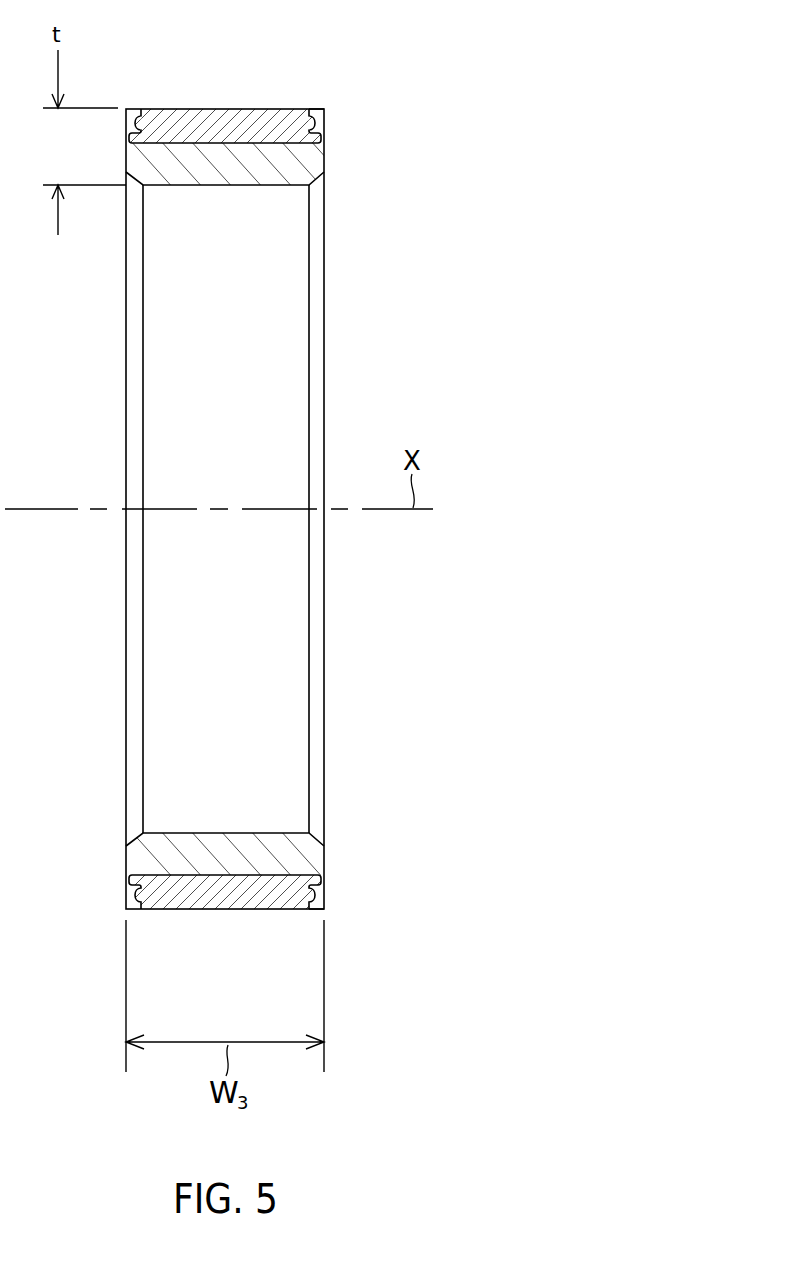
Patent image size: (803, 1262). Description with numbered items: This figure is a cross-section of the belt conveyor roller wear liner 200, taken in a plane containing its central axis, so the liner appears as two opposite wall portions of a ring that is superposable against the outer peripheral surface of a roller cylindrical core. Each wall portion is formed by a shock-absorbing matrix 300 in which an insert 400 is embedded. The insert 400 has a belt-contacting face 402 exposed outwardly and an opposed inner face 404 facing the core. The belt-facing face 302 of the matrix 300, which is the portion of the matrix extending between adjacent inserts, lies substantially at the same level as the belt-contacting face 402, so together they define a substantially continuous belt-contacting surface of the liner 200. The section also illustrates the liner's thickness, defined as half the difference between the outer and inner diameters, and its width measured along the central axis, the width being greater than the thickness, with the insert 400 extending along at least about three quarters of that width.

The belt conveyor roller wear liner 200 is at (433, 105).
The shock-absorbing matrix 300 is at (313, 127).
The belt-facing face of the matrix 302 is at (320, 108).
The insert 400 is at (202, 123).
The belt-contacting face of the insert 402 is at (272, 108).
The inner face of the insert 404 is at (223, 146).